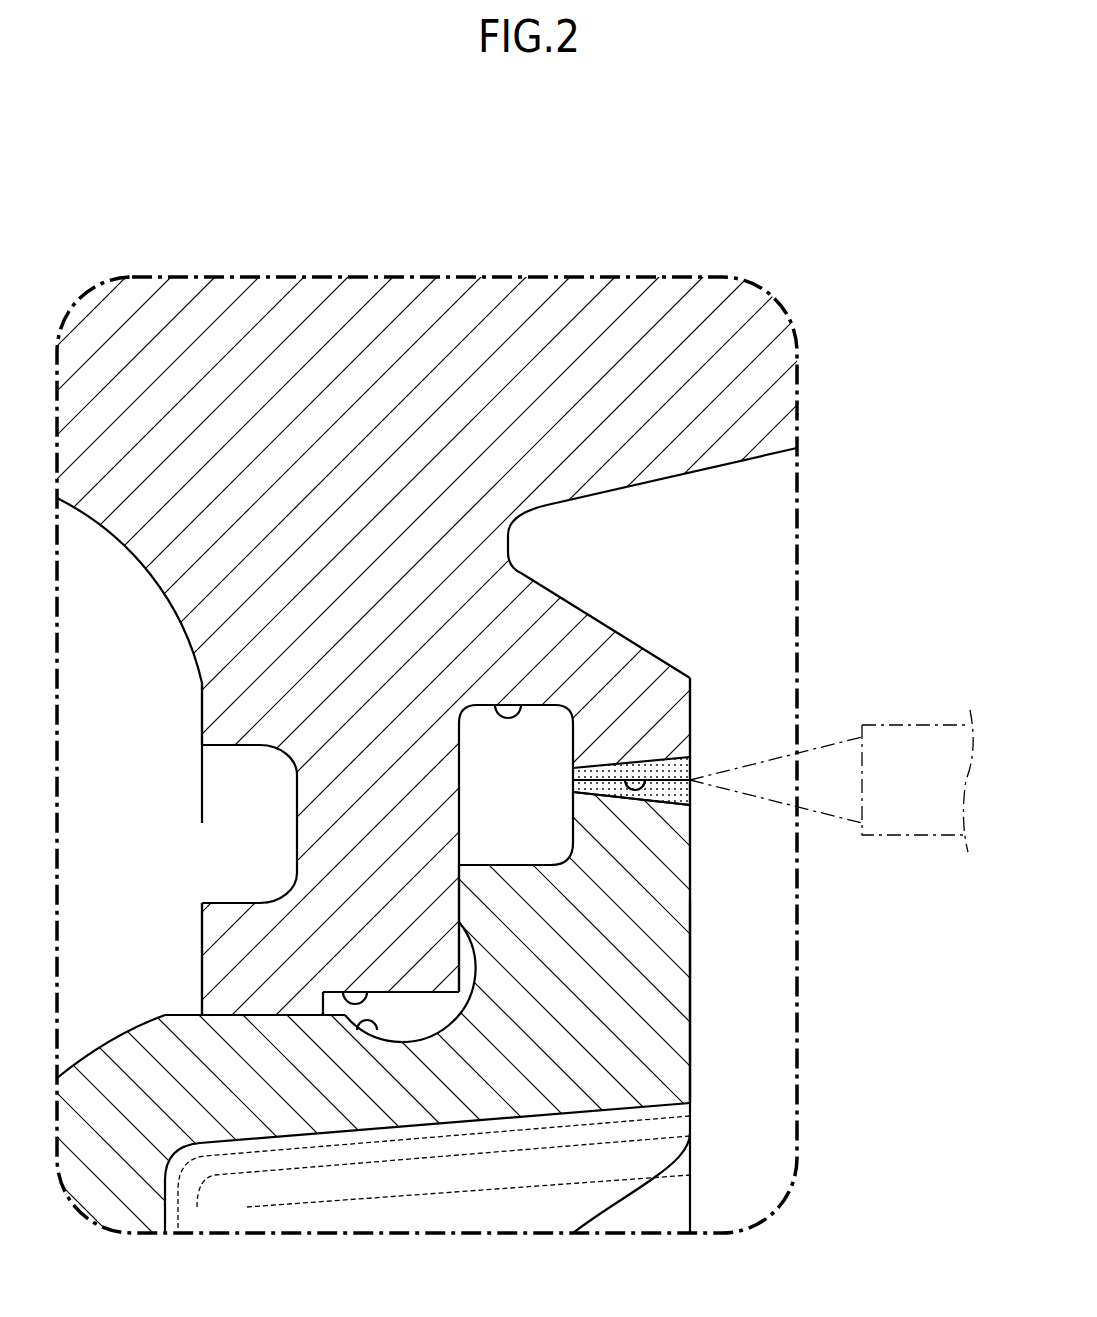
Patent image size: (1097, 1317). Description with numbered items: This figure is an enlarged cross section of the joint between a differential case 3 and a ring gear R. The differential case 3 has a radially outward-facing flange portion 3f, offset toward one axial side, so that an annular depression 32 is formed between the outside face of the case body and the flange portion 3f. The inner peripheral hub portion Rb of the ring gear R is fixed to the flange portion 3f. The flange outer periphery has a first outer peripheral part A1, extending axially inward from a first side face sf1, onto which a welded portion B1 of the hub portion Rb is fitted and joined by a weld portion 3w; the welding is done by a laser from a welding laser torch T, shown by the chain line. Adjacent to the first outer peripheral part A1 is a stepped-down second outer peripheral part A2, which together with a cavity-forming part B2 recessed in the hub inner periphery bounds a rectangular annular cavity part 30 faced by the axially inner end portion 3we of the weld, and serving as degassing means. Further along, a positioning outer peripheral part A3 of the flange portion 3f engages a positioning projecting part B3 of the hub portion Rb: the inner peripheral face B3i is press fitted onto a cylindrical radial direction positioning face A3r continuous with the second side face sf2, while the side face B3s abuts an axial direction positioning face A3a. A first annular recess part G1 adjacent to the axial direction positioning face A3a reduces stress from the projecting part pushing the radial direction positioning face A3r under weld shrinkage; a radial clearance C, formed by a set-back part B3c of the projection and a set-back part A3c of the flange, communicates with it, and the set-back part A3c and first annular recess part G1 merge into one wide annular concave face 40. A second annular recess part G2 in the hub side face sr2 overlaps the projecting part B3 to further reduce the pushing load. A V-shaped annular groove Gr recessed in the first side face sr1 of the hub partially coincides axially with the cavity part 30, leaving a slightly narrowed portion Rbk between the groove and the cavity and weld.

The ring gear R is at (723, 470).
The hub portion Rb is at (360, 651).
The annular groove Gr is at (568, 600).
The narrowed portion Rbk is at (624, 647).
The first side face sr1 is at (692, 707).
The side face sr2 is at (202, 718).
The second annular recess part G2 is at (297, 830).
The positioning projecting part B3 is at (195, 920).
The cavity part 30 is at (530, 807).
The cavity-forming part B2 is at (508, 705).
The axially inner end portion 3we is at (573, 773).
The welded portion B1 is at (645, 780).
The first outer peripheral part A1 is at (625, 795).
The second outer peripheral part A2 is at (498, 865).
The axial direction positioning face A3a is at (458, 883).
The side face B3s is at (460, 903).
The set-back part B3c is at (355, 992).
The radial clearance C is at (408, 1026).
The flange portion 3f is at (587, 1014).
The positioning outer peripheral part A3 is at (262, 1004).
The radial direction positioning face A3r is at (238, 1015).
The inner peripheral face B3i is at (240, 1017).
The second side face sf2 is at (112, 1047).
The first side face sf1 is at (692, 968).
The differential case 3 is at (700, 1057).
The annular concave face 40 is at (468, 1168).
The set-back part A3c is at (378, 1032).
The first annular recess part G1 is at (468, 960).
The annular depression 32 is at (610, 1208).
The weld portion 3w is at (700, 797).
The welding laser torch T is at (915, 835).